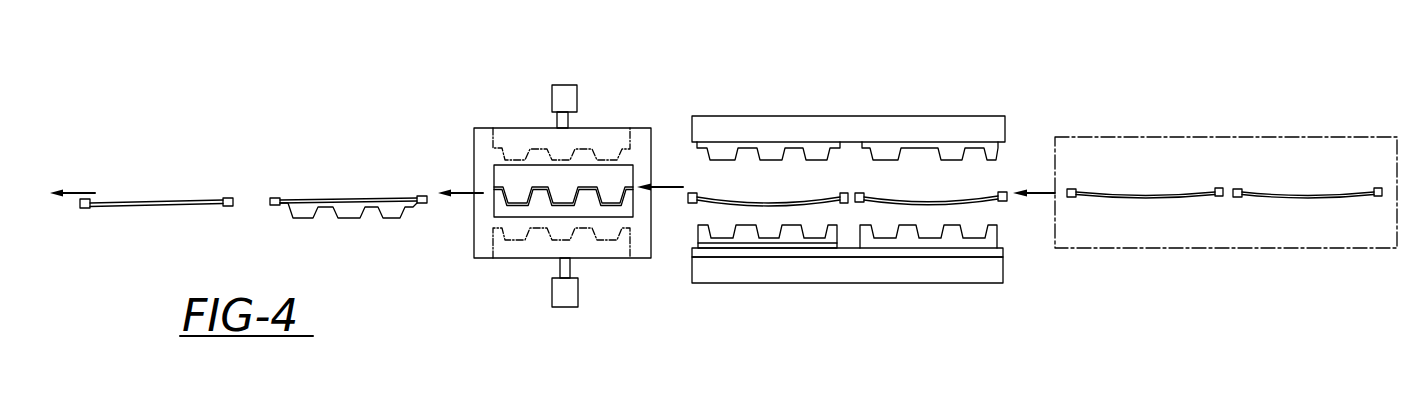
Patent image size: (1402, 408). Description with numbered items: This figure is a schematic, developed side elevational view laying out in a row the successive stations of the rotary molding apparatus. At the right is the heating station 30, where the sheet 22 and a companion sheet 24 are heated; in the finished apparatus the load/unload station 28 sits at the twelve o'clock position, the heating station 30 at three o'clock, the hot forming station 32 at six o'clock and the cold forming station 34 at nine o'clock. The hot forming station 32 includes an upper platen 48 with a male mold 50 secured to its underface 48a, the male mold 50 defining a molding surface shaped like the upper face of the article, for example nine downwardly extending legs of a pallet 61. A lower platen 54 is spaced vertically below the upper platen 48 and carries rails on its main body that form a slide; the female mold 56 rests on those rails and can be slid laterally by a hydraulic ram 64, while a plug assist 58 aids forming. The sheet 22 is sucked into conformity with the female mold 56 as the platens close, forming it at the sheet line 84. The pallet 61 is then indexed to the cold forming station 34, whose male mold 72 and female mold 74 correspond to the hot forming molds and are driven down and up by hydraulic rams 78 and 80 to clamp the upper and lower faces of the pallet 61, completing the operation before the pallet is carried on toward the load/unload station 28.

The sheet 22 is at (920, 196).
The first workpiece strip 24 is at (762, 203).
The load/unload station 28 is at (205, 166).
The heating station 30 is at (1203, 125).
The hot forming station 32 is at (895, 194).
The cold forming station 34 is at (539, 198).
The upper platen 48 is at (883, 115).
The underface of upper platen 48a is at (1003, 141).
The male mold 50 is at (778, 152).
The lower platen 54 is at (913, 270).
The female mold 56 is at (902, 238).
The plug assist 58 is at (787, 241).
The plastic pallet 61 is at (354, 215).
The hydraulic ram 64 is at (476, 128).
The male mold 72 is at (492, 178).
The female mold 74 is at (492, 211).
The hydraulic ram 78 is at (558, 98).
The hydraulic ram 80 is at (577, 300).
The sheet line 84 is at (678, 186).